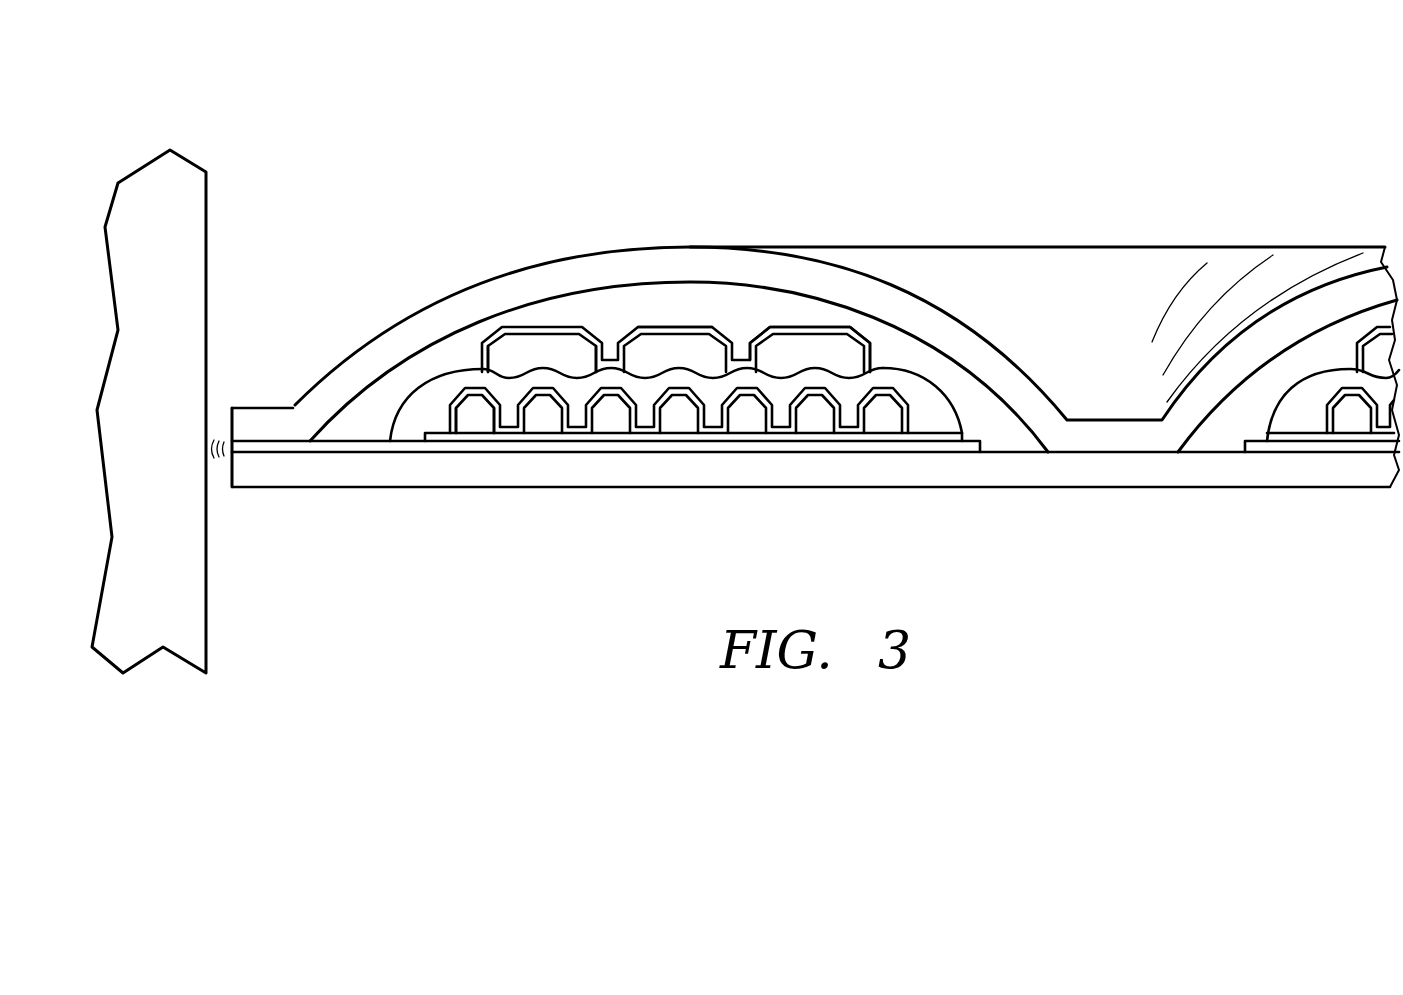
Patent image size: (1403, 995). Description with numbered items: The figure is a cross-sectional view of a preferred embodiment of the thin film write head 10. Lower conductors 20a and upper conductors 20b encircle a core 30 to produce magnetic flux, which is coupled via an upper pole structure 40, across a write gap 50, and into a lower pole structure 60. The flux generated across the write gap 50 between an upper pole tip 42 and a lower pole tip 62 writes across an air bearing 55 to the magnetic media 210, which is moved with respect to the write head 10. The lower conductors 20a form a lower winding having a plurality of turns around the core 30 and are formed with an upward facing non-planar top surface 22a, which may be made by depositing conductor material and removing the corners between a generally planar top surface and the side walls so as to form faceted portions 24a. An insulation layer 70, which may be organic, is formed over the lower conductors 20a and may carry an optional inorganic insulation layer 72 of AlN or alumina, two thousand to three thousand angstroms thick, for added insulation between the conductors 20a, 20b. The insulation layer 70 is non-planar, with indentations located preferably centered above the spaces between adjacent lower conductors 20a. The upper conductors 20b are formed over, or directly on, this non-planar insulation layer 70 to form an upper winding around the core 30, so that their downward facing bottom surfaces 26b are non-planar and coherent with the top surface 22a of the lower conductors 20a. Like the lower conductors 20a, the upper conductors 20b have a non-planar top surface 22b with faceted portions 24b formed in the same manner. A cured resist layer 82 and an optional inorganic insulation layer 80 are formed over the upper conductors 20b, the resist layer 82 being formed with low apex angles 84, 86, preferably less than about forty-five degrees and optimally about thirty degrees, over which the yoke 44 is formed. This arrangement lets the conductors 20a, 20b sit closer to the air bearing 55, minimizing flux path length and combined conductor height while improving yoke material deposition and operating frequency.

The thin film write head 10 is at (390, 213).
The lower conductors 20a is at (473, 417).
The upper conductors 20b is at (683, 345).
The non-planar top surface 22a is at (478, 392).
The non-planar top surface 22b is at (556, 333).
The faceted portions 24a is at (447, 400).
The faceted portions 24b is at (484, 334).
The bottom surfaces 26b is at (763, 376).
The core 30 is at (1062, 350).
The upper pole structure 40 is at (873, 271).
The upper pole tip 42 is at (276, 428).
The yoke 44 is at (935, 312).
The write gap 50 is at (216, 455).
The air bearing 55 is at (217, 403).
The lower pole structure 60 is at (347, 490).
The lower pole tip 62 is at (287, 475).
The insulation layer 70 is at (923, 408).
The inorganic insulation layer 72 is at (834, 420).
The inorganic insulation layer 80 is at (822, 328).
The cured resist layer 82 is at (762, 305).
The apex angle 84 is at (368, 440).
The apex angle 86 is at (1002, 450).
The magnetic media 210 is at (210, 195).